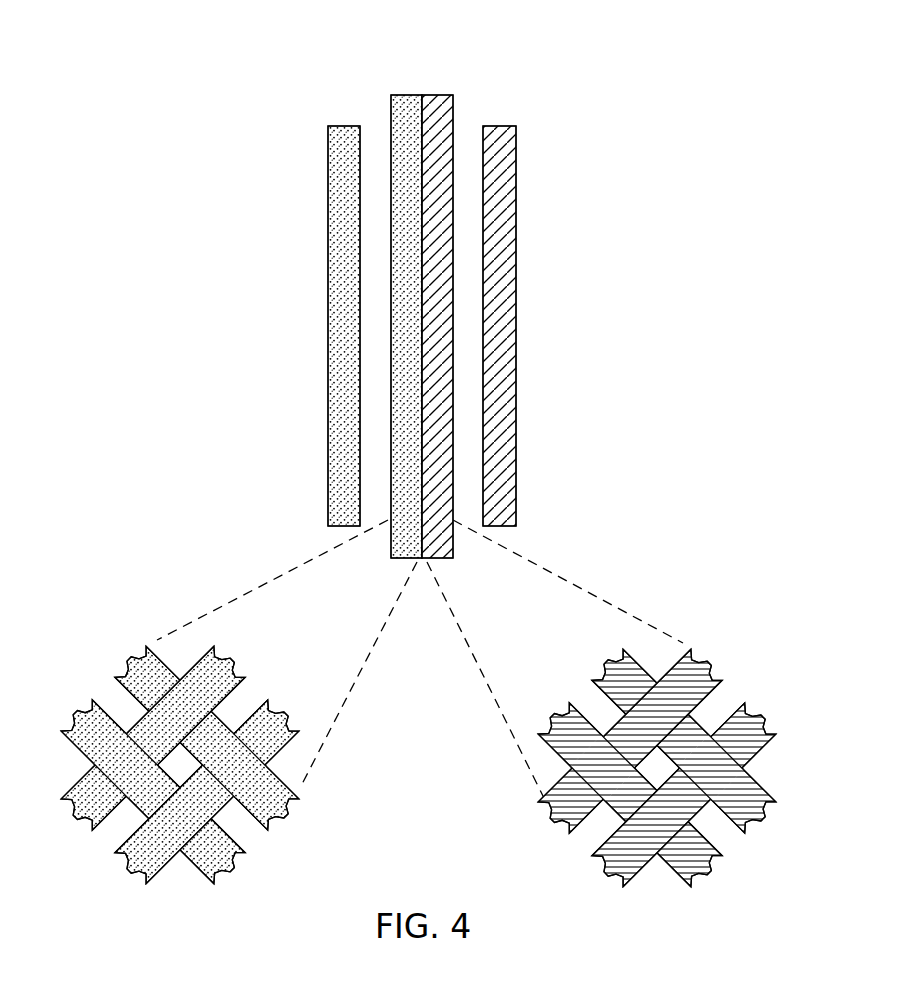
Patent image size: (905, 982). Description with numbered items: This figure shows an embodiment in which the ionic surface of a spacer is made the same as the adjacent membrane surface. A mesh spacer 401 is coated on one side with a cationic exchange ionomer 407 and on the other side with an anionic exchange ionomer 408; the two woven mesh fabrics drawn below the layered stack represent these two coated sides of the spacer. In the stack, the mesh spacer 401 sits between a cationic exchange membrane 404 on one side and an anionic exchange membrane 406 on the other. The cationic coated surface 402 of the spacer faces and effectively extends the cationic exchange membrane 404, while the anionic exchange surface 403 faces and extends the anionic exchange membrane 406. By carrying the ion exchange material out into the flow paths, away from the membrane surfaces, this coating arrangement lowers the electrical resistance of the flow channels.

The mesh spacer 401 is at (423, 289).
The cationic coated surface 402 is at (390, 118).
The anionic exchange surface 403 is at (453, 113).
The cationic exchange membrane 404 is at (328, 330).
The anionic exchange membrane 406 is at (517, 313).
The cationic exchange ionomer 407 is at (83, 820).
The anionic exchange ionomer 408 is at (763, 810).